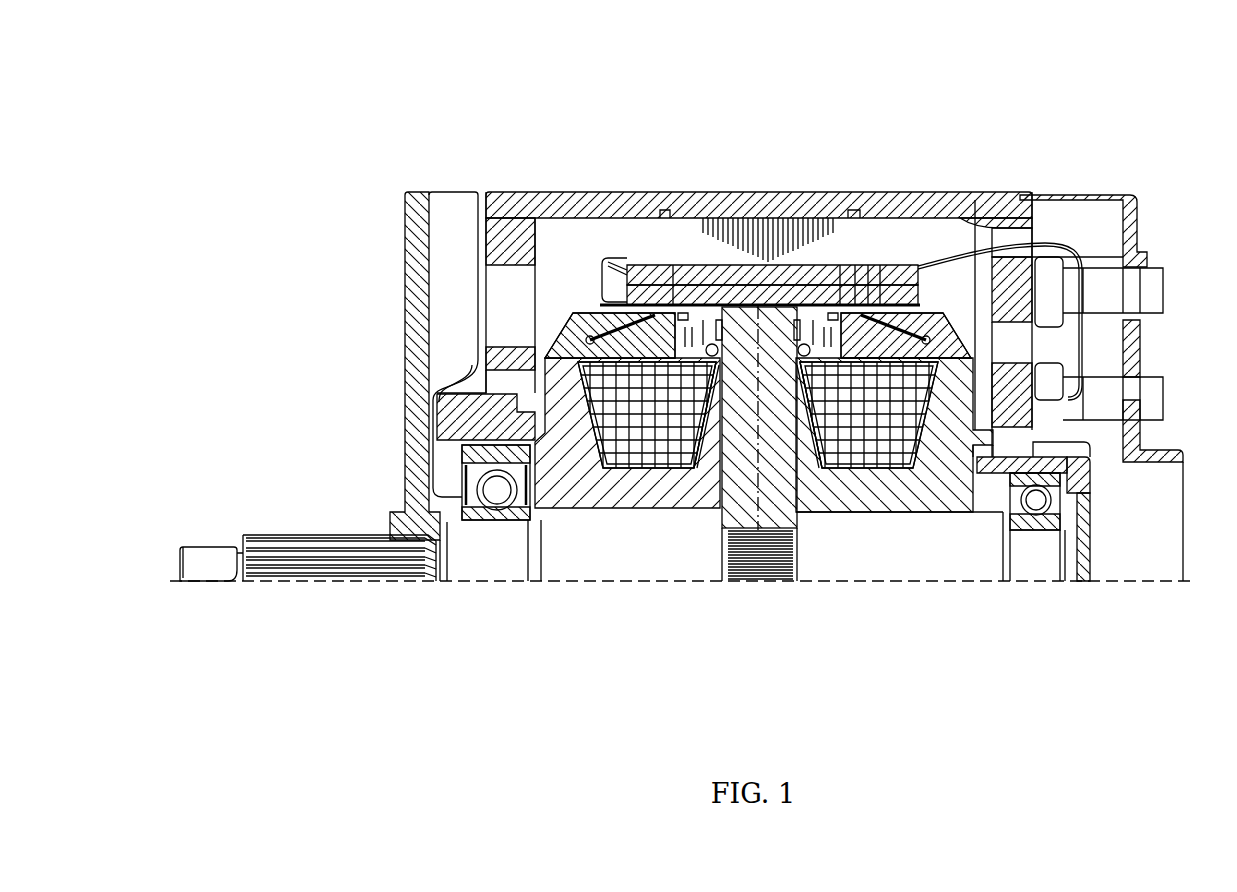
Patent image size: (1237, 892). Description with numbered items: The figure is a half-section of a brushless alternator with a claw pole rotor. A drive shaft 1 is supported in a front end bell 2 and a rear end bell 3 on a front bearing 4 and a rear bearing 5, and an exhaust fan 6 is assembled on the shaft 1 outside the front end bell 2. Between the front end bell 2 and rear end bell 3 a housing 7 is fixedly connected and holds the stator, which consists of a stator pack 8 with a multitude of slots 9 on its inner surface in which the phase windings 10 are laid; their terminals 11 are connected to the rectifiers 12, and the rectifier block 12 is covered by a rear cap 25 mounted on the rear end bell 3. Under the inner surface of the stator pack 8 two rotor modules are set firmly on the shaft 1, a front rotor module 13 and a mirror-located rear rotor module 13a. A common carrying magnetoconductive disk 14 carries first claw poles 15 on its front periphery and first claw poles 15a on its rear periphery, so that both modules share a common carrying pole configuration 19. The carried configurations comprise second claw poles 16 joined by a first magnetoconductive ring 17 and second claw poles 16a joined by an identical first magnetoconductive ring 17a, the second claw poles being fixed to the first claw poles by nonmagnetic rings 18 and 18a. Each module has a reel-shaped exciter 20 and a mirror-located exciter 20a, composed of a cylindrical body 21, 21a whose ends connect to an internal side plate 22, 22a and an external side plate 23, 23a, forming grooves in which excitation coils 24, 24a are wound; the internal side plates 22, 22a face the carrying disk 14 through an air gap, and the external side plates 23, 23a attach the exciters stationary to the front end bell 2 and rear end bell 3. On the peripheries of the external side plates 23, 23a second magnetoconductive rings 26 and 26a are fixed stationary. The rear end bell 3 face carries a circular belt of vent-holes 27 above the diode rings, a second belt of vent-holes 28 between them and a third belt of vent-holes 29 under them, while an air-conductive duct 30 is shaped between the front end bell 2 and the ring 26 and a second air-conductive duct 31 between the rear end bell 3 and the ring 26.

The drive shaft 1 is at (213, 562).
The front end bell 2 is at (453, 412).
The rear end bell 3 is at (1083, 477).
The front bearing 4 is at (497, 490).
The rear bearing 5 is at (1043, 500).
The exhaust fan 6 is at (423, 357).
The housing 7 is at (750, 268).
The stator pack 8 is at (838, 265).
The slots 9 is at (770, 267).
The phase windings 10 is at (853, 267).
The terminals 11 is at (1135, 202).
The rectifiers 12 is at (1085, 263).
The front rotor module 13 is at (668, 317).
The rear rotor module 13a is at (850, 317).
The carrying magnetoconductive disk 14 is at (733, 367).
The first claw poles 15 is at (707, 318).
The first claw poles 15a is at (809, 318).
The second claw poles 16 is at (680, 435).
The second claw poles 16a is at (780, 330).
The first magnetoconductive ring 17 is at (616, 257).
The first magnetoconductive ring 17a is at (905, 265).
The nonmagnetic ring 18 is at (720, 400).
The nonmagnetic ring 18a is at (798, 400).
The common carrying pole configuration 19 is at (760, 330).
The exciter 20 is at (647, 408).
The exciter 20a is at (872, 412).
The cylindrical body 21 is at (642, 490).
The cylindrical body 21a is at (875, 488).
The internal side plate 22 is at (702, 447).
The internal side plate 22a is at (817, 452).
The external side plate 23 is at (573, 332).
The external side plate 23a is at (953, 427).
The excitation coil 24 is at (617, 425).
The excitation coil 24a is at (897, 430).
The rear cap 25 is at (1122, 197).
The second magnetoconductive ring 26 is at (562, 385).
The second magnetoconductive ring 26a is at (1010, 237).
The circular belt of vent-holes 27 is at (1050, 263).
The second circular belt of vent-holes 28 is at (1013, 341).
The third circular belt of vent-holes 29 is at (1068, 447).
The air-conductive duct 30 is at (538, 393).
The second air-conductive duct 31 is at (1028, 470).